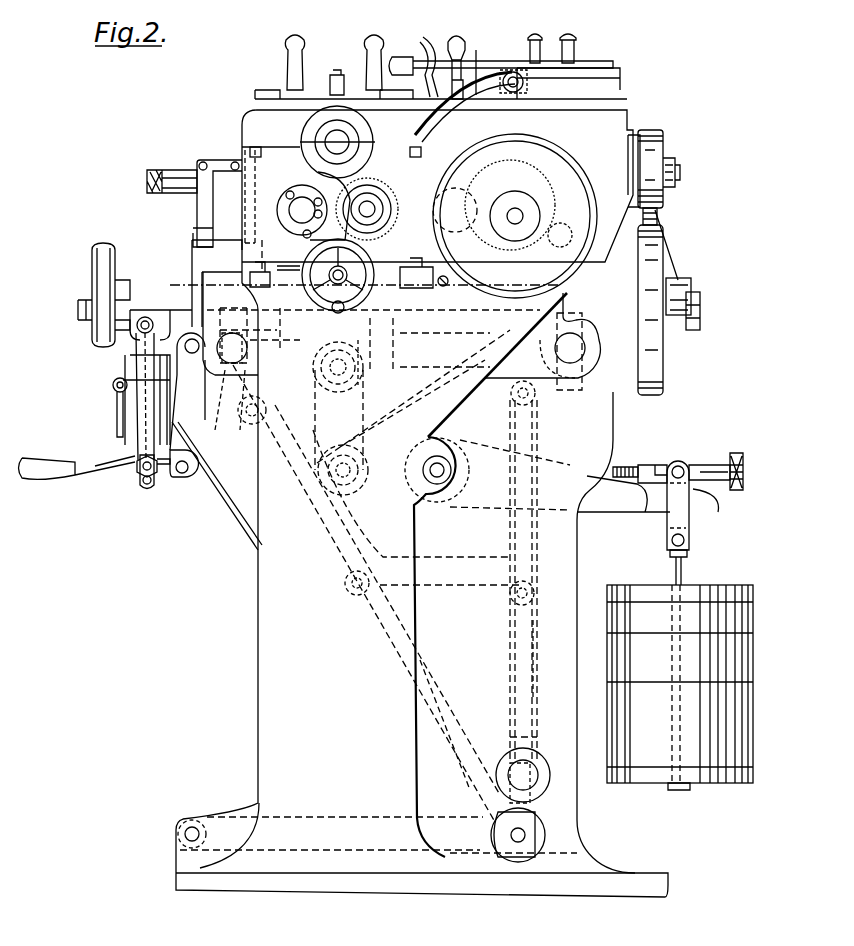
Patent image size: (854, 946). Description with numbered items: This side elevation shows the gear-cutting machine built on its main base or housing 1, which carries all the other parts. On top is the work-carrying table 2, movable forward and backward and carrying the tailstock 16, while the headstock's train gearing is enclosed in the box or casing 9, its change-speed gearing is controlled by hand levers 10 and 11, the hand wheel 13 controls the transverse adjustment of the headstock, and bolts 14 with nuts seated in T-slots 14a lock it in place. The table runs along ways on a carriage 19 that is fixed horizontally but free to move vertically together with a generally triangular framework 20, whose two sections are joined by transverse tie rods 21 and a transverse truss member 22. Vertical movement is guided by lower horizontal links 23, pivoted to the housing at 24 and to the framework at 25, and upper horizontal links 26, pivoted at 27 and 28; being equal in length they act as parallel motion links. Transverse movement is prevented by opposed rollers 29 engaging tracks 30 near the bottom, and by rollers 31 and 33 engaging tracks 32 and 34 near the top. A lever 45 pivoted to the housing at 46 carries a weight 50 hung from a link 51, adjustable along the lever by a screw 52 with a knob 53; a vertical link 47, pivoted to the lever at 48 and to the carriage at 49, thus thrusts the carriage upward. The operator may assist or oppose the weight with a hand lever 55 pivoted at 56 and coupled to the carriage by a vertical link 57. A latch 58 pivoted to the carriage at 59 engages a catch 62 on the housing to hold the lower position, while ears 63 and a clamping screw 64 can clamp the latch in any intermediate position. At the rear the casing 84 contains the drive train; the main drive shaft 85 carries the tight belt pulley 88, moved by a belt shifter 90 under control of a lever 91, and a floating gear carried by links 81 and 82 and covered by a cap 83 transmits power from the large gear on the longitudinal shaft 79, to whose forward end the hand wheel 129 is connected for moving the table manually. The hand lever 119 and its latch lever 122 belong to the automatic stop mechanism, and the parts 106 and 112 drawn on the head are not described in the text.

The main base or housing 1 is at (272, 620).
The work-carrying table 2 is at (195, 262).
The box or casing 9 is at (367, 205).
The hand lever 10 is at (287, 70).
The hand lever 11 is at (501, 73).
The hand wheel 13 is at (345, 276).
The bolts 14 is at (249, 152).
The T-slots 14a is at (262, 287).
The tailstock 16 is at (218, 172).
The carriage 19 is at (215, 293).
The framework 20 is at (438, 684).
The transverse tie rods 21 is at (355, 595).
The transverse truss member 22 is at (536, 667).
The horizontal links 23 is at (350, 816).
The pivot 24 is at (195, 822).
The pivot 25 is at (525, 834).
The horizontal links 26 is at (375, 366).
The pivot 27 is at (192, 355).
The pivot 28 is at (527, 392).
The opposed rollers 29 is at (535, 770).
The tracks 30 is at (538, 742).
The opposed rollers 31 is at (576, 338).
The tracks 32 is at (568, 379).
The opposed rollers 33 is at (230, 365).
The tracks 34 is at (236, 422).
The lever 45 is at (612, 505).
The pivot 46 is at (438, 485).
The vertical link 47 is at (312, 410).
The pivot 48 is at (345, 480).
The pivot 49 is at (312, 375).
The weight 50 is at (745, 718).
The link 51 is at (692, 521).
The screw 52 is at (620, 467).
The knob 53 is at (737, 462).
The hand lever 55 is at (42, 470).
The pivot 56 is at (184, 480).
The vertical link 57 is at (144, 493).
The latch 58 is at (135, 432).
The pivot 59 is at (145, 317).
The catch 62 is at (138, 455).
The ears 63 is at (117, 378).
The clamping screw 64 is at (115, 390).
The shaft 79 is at (695, 300).
The link 81 is at (655, 265).
The link 82 is at (665, 205).
The cap 83 is at (690, 345).
The housing or casing 84 is at (620, 135).
The main drive shaft 85 is at (520, 215).
The tight belt pulley 88 is at (572, 163).
The belt shifter 90 is at (480, 85).
The lever 91 is at (476, 48).
The knob 106 is at (577, 55).
The knob 112 is at (543, 50).
The hand lever 119 is at (455, 36).
The latch lever 122 is at (423, 37).
The hand wheel 129 is at (92, 274).